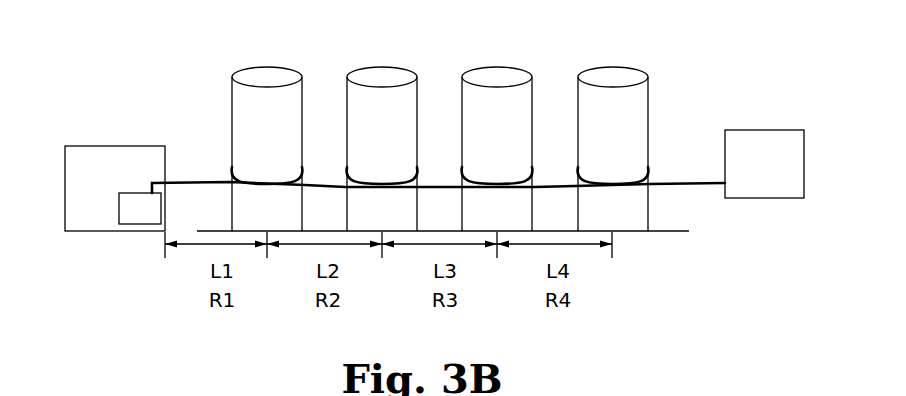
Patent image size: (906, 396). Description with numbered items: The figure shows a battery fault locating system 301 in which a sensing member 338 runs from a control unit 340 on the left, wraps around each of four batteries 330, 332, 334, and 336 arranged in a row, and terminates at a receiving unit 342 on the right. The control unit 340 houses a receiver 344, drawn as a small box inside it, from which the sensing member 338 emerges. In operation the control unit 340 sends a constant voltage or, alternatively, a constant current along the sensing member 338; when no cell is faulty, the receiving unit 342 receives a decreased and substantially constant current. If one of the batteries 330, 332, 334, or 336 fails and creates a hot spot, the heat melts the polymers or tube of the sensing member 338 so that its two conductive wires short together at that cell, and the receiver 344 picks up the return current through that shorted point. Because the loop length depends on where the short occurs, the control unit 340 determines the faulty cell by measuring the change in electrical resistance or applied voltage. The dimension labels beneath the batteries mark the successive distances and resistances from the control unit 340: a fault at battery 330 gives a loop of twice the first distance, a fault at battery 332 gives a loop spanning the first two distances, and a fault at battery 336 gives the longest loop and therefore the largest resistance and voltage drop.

The battery fault locating system 301 is at (132, 35).
The battery cell 330 is at (247, 148).
The battery cell 332 is at (364, 148).
The battery cell 334 is at (479, 148).
The battery cell 336 is at (595, 148).
The sensing member 338 is at (202, 177).
The control unit 340 is at (113, 181).
The receiving unit 342 is at (749, 178).
The receiver 344 is at (140, 213).